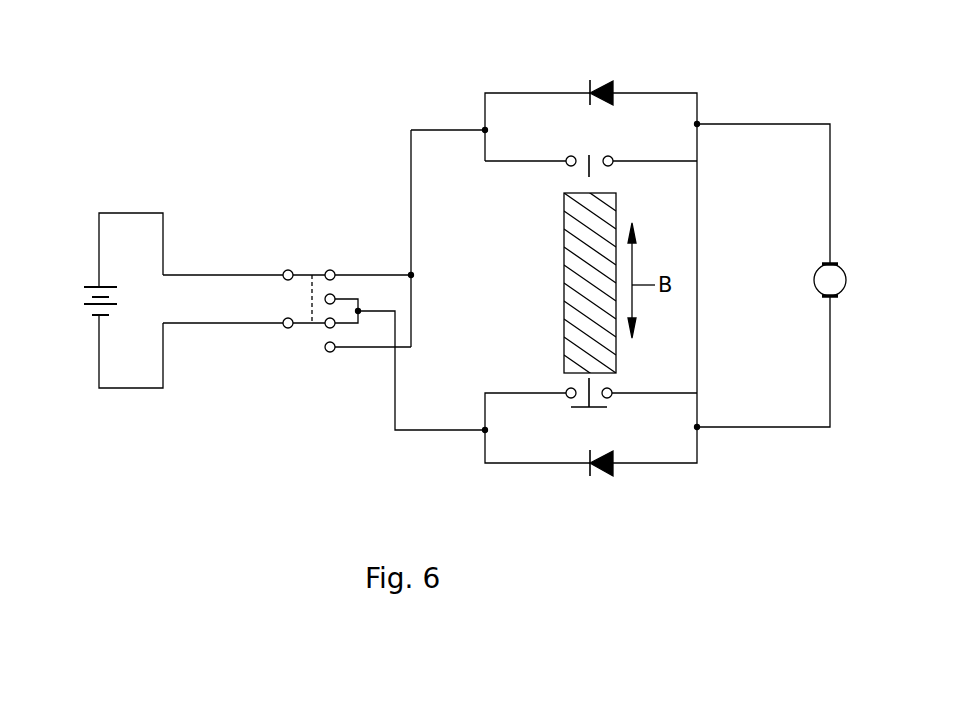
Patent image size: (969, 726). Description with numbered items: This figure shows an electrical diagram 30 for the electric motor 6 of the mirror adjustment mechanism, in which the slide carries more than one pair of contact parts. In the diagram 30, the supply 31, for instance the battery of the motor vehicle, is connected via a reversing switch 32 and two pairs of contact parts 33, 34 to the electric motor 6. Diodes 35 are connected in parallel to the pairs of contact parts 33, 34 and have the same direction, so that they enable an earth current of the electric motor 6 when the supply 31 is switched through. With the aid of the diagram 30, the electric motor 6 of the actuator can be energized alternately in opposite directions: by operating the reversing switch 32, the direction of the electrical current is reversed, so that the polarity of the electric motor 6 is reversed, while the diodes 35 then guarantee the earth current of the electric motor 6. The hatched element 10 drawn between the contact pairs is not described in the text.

The electrical diagram 30 is at (333, 200).
The supply 31 is at (90, 327).
The reversing switch 32 is at (305, 345).
The pair of contact parts 33 is at (619, 171).
The pair of contact parts 34 is at (619, 377).
The diode 35 is at (623, 73).
The permanent magnet 10 is at (564, 285).
The electric motor 6 is at (847, 280).